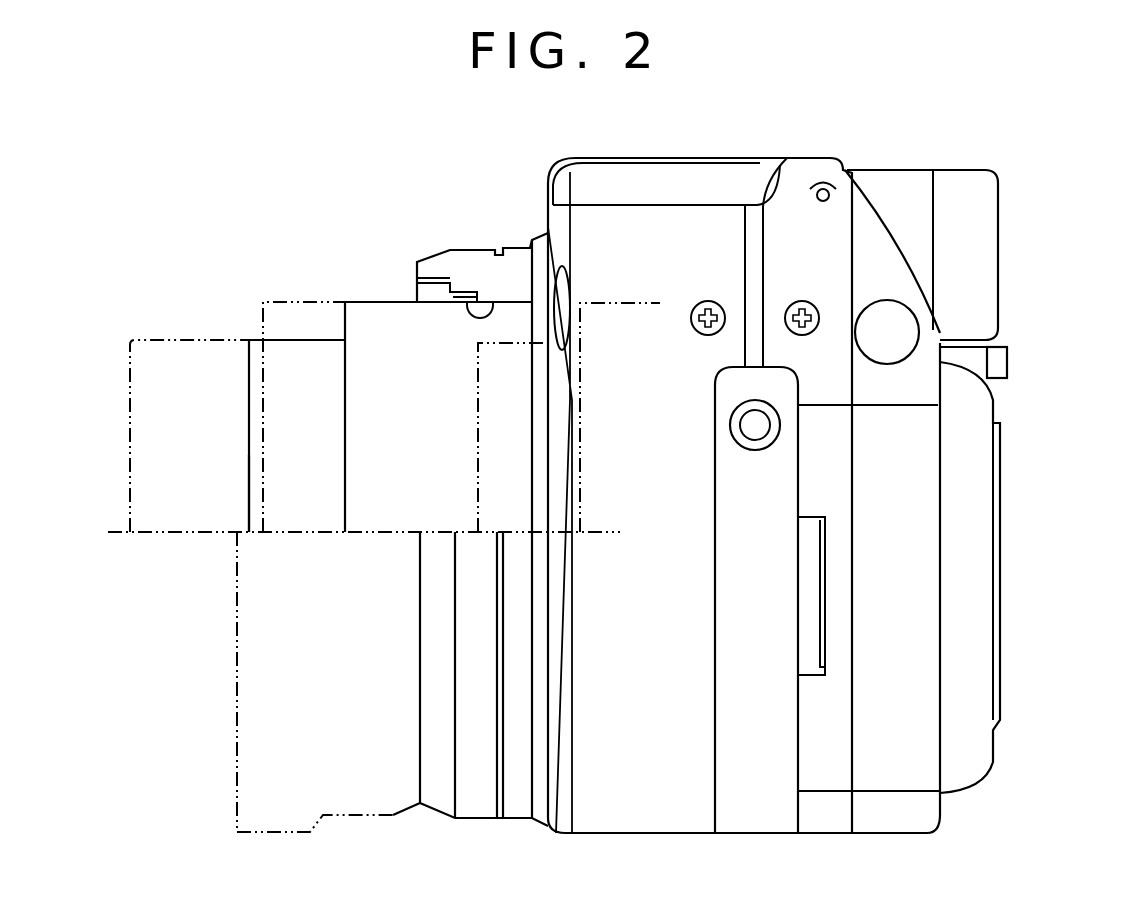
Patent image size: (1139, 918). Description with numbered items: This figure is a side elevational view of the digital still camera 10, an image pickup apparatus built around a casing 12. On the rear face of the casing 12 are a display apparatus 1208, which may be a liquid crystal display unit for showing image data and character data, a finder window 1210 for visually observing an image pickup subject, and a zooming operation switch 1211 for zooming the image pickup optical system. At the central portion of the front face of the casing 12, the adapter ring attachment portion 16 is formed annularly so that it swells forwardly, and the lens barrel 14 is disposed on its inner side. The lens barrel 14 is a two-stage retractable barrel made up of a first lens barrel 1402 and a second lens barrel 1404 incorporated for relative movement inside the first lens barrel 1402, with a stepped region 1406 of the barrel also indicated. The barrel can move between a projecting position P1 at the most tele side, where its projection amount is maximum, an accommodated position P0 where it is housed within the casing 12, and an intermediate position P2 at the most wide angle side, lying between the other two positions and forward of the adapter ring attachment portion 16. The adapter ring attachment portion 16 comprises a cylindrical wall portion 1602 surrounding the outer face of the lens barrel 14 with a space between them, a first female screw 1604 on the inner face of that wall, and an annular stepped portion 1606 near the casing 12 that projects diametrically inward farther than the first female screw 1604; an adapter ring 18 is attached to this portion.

The digital still camera 10 is at (813, 143).
The casing 12 is at (917, 765).
The lens barrel 14 is at (180, 168).
The adapter ring attachment portion 16 is at (518, 243).
The adapter ring 18 is at (327, 818).
The display apparatus 1208 is at (1000, 483).
The finder window 1210 is at (998, 218).
The zooming operation switch 1211 is at (1007, 360).
The first lens barrel 1402 is at (365, 300).
The second lens barrel 1404 is at (298, 338).
The lens step portion 1406 is at (250, 457).
The cylindrical wall portion 1602 is at (485, 818).
The first female screw 1604 is at (410, 292).
The annular stepped portion 1606 is at (490, 300).
The accommodated position P0 is at (472, 358).
The projecting position P1 is at (130, 368).
The intermediate position P2 is at (248, 368).